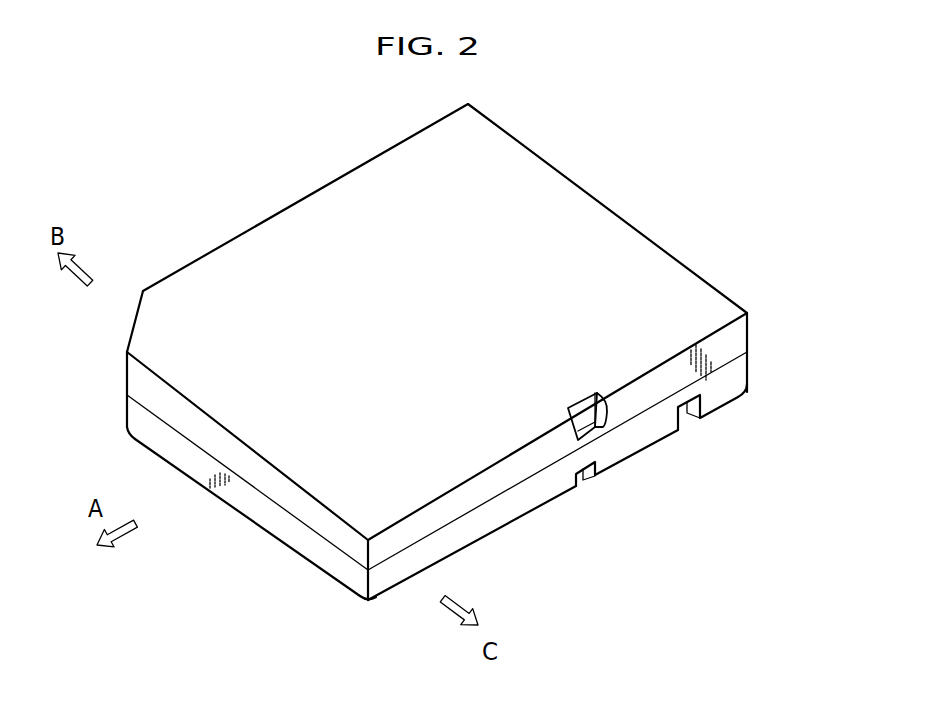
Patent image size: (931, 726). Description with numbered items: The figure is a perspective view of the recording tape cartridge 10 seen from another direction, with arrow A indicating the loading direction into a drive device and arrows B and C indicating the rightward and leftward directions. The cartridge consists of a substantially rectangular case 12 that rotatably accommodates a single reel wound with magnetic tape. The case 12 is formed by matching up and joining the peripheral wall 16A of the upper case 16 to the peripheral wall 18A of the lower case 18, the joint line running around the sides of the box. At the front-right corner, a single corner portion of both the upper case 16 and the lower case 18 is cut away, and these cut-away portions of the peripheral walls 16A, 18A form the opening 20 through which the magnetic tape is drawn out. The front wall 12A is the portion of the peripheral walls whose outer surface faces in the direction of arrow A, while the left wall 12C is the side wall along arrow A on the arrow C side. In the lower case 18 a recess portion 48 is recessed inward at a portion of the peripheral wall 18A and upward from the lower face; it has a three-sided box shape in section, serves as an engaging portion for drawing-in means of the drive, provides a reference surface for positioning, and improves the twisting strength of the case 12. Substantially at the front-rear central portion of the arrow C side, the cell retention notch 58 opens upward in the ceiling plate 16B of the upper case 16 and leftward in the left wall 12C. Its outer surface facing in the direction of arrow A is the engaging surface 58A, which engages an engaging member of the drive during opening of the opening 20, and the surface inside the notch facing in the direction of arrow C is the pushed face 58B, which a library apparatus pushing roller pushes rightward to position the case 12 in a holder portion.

The recording tape cartridge 10 is at (619, 174).
The case 12 is at (802, 320).
The front wall 12A is at (205, 538).
The left wall 12C is at (587, 532).
The upper case 16 is at (752, 335).
The peripheral wall of the upper case 16A is at (268, 483).
The ceiling plate 16B is at (627, 372).
The lower case 18 is at (752, 375).
The peripheral wall of the lower case 18A is at (290, 532).
The opening 20 is at (125, 349).
The recess portion 48 is at (583, 482).
The cell retention notch 58 is at (572, 428).
The engaging surface 58A is at (590, 412).
The pushed face 58B is at (592, 424).